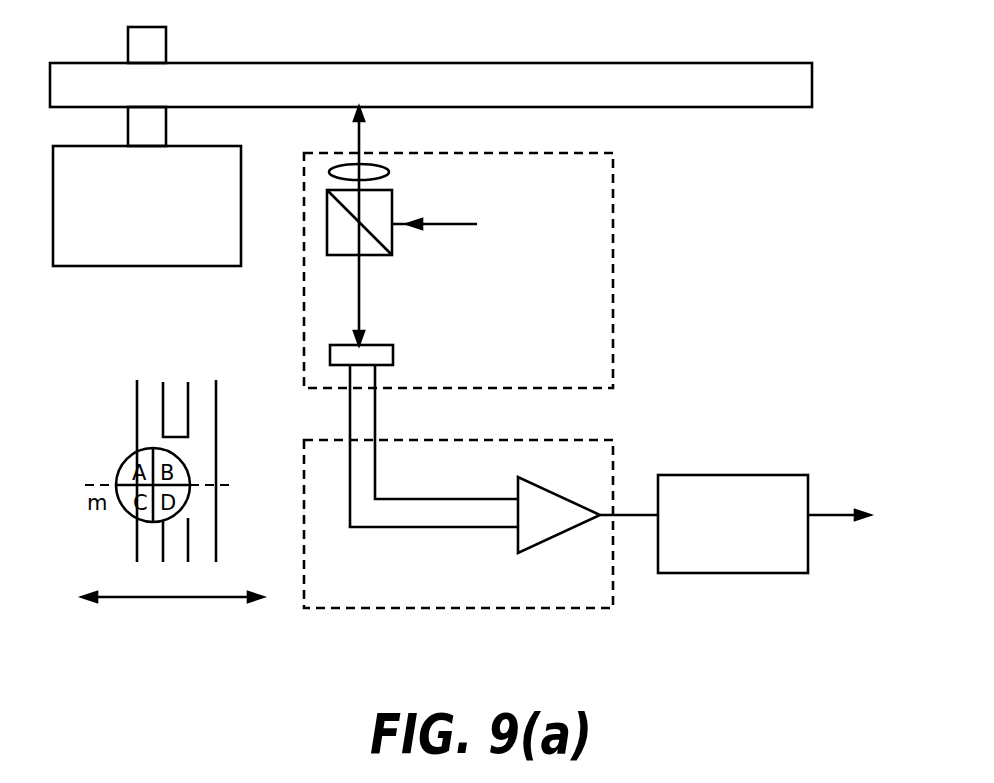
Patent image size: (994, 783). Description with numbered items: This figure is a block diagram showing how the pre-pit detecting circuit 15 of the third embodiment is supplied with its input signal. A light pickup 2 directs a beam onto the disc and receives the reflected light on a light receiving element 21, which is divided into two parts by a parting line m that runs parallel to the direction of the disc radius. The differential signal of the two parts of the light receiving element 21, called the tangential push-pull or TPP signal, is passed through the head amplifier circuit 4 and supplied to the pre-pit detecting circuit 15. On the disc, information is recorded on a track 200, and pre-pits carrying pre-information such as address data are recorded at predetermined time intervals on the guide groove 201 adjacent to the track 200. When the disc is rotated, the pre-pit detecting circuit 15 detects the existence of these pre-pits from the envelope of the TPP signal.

The light pickup 2 is at (613, 350).
The light receiving element 21 is at (393, 343).
The head amplifier circuit 4 is at (603, 457).
The pre-pit detecting circuit 15 is at (717, 573).
The track 200 is at (153, 388).
The guide groove 201 is at (178, 392).